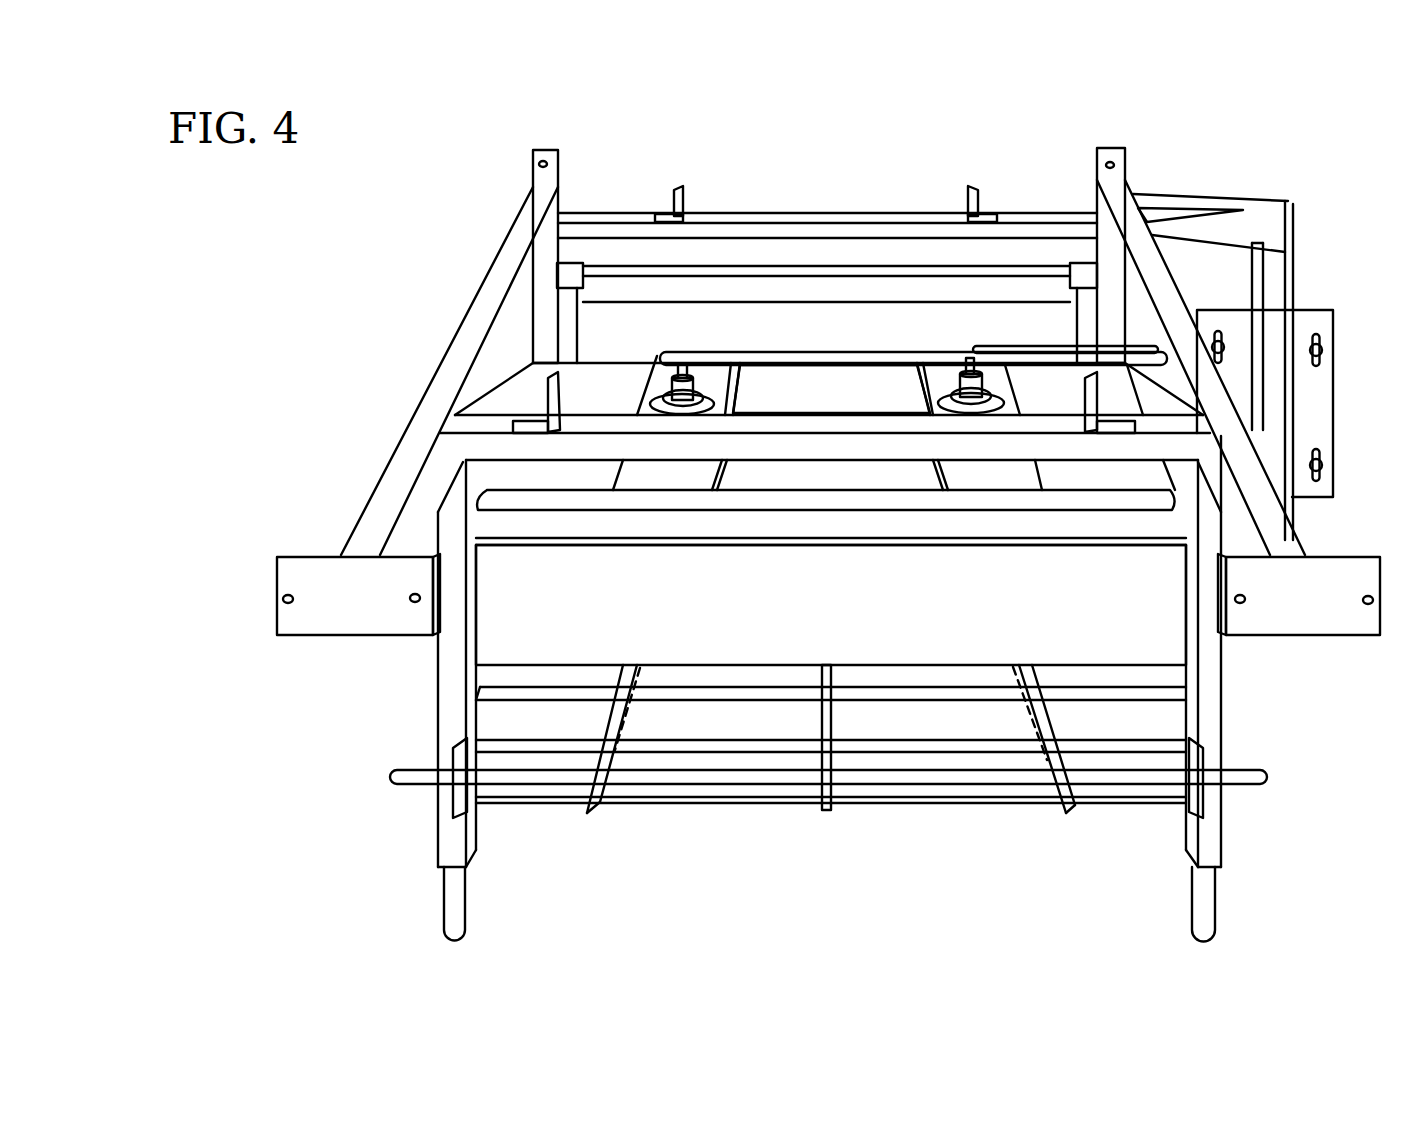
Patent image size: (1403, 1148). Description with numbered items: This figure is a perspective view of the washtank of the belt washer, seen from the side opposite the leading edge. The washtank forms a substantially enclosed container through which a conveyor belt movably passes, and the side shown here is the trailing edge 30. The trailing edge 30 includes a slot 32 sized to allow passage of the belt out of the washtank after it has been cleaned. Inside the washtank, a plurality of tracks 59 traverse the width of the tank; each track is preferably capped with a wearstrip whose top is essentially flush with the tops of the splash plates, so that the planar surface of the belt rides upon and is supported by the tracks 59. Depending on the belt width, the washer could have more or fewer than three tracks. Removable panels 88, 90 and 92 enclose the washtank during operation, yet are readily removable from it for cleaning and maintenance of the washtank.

The trailing edge 30 is at (1133, 617).
The slot 32 is at (693, 665).
The tracks 59 is at (608, 802).
The removable panel 88 is at (1028, 380).
The removable panel 90 is at (765, 387).
The removable panel 92 is at (605, 388).